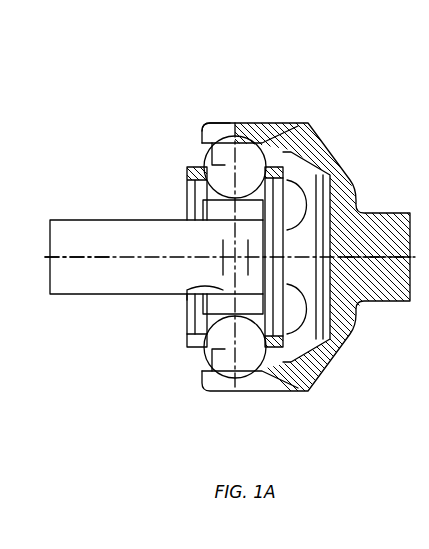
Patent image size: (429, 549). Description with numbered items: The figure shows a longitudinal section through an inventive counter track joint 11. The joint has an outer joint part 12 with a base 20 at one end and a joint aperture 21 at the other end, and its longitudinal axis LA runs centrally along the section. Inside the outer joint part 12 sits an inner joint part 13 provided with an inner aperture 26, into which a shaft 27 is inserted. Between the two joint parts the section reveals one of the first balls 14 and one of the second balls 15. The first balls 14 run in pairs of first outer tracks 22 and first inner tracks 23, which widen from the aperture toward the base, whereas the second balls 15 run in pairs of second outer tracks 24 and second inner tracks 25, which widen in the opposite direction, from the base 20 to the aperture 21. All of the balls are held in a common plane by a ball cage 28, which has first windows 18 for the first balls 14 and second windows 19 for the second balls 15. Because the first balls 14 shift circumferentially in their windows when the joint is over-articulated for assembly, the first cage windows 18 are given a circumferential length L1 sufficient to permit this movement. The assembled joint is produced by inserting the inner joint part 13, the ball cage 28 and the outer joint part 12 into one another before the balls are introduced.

The counter track joint 11 is at (214, 274).
The outer joint part 12 is at (230, 130).
The inner joint part 13 is at (190, 186).
The first balls 14 is at (222, 357).
The second balls 15 is at (235, 123).
The first windows 18 is at (207, 368).
The second windows 19 is at (228, 137).
The base 20 is at (345, 178).
The joint aperture 21 is at (203, 152).
The first outer tracks 22 is at (267, 363).
The first inner tracks 23 is at (270, 360).
The second outer tracks 24 is at (275, 140).
The second inner tracks 25 is at (259, 138).
The inner aperture 26 is at (187, 297).
The shaft 27 is at (143, 280).
The ball cage 28 is at (193, 343).
The circumferential length L1 is at (100, 257).
The longitudinal axis of the outer joint part LA is at (373, 257).